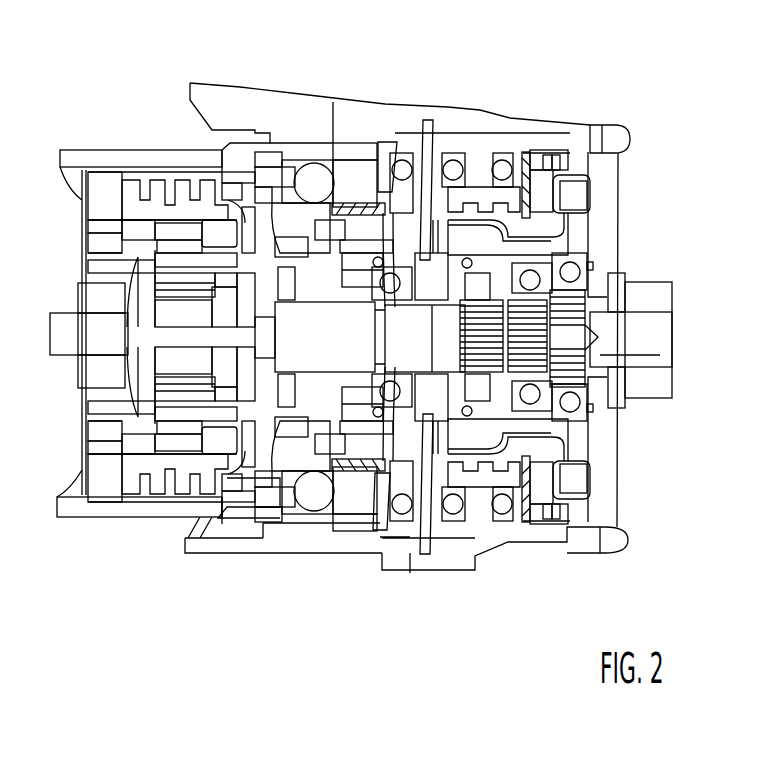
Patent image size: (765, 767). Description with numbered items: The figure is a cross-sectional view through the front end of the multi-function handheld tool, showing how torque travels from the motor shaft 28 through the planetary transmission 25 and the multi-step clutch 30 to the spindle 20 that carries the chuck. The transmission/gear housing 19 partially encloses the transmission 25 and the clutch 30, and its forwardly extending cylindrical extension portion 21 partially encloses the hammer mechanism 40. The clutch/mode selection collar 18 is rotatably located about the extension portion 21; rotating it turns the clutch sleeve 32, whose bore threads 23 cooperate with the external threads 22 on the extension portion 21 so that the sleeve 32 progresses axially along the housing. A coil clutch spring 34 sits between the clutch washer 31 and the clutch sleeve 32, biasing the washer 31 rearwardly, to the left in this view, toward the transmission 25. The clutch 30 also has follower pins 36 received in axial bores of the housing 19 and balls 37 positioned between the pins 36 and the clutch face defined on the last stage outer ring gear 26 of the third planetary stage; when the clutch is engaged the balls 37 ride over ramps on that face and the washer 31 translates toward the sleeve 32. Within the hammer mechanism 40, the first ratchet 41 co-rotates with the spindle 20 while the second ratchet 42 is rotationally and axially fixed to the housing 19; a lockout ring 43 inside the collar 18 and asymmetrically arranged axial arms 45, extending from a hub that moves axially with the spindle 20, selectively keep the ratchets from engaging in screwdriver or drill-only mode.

The clutch/mode selection collar 18 is at (535, 550).
The transmission/gear housing 19 is at (243, 95).
The spindle 20 is at (588, 308).
The cylindrical extension portion 21 is at (423, 230).
The external threads 22 is at (557, 468).
The threads 23 is at (510, 460).
The planetary transmission 25 is at (178, 285).
The last stage outer ring gear 26 is at (258, 497).
The motor shaft 28 is at (62, 327).
The multi-step clutch 30 is at (550, 630).
The clutch washer 31 is at (380, 533).
The clutch sleeve 32 is at (510, 510).
The coil clutch spring 34 is at (452, 508).
The cylindrical pins 36 is at (358, 177).
The balls 37 is at (317, 183).
The hammer mechanism 40 is at (645, 57).
The first ratchet 41 is at (478, 280).
The second ratchet 42 is at (435, 253).
The ring 43 is at (578, 200).
The axial arms 45 is at (518, 240).